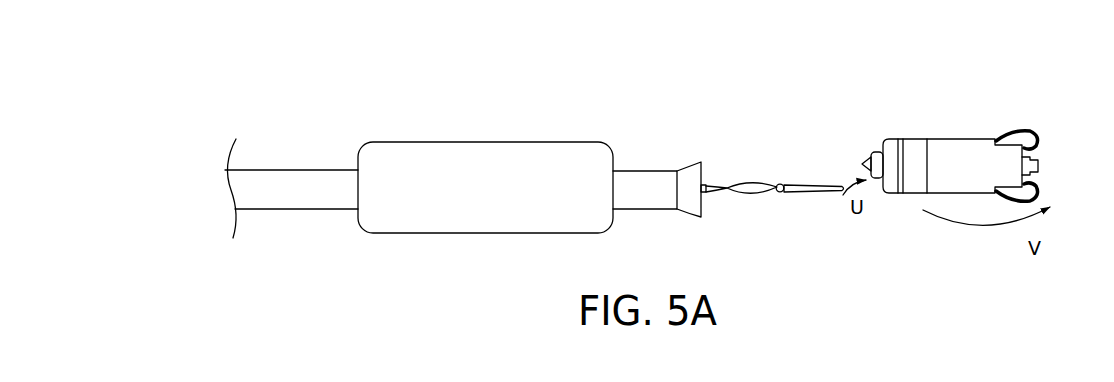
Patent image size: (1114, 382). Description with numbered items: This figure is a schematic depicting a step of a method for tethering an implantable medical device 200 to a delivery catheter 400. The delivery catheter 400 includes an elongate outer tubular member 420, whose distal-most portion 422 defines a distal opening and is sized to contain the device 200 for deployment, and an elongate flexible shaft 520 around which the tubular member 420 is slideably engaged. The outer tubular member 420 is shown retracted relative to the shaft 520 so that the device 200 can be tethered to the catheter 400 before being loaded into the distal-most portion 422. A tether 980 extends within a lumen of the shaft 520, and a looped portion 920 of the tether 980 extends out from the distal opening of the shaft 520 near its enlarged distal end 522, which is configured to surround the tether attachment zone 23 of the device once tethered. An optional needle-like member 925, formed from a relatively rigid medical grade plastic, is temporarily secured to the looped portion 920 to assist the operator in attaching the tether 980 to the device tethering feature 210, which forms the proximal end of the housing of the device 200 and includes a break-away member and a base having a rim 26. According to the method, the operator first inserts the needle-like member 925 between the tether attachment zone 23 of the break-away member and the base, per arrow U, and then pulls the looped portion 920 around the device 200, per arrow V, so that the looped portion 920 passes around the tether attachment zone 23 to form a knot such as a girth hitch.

The elongate outer tubular member 420 is at (320, 180).
The delivery catheter 400 is at (442, 115).
The distal-most portion 422 is at (494, 197).
The elongate flexible shaft 520 is at (650, 206).
The distal end 522 is at (687, 175).
The tether 980 is at (757, 167).
The looped portion 920 is at (745, 198).
The needle-like member 925 is at (826, 205).
The tether attachment zone 23 is at (860, 164).
The rim 26 is at (876, 179).
The tethering feature 210 is at (876, 133).
The implantable medical device 200 is at (926, 140).